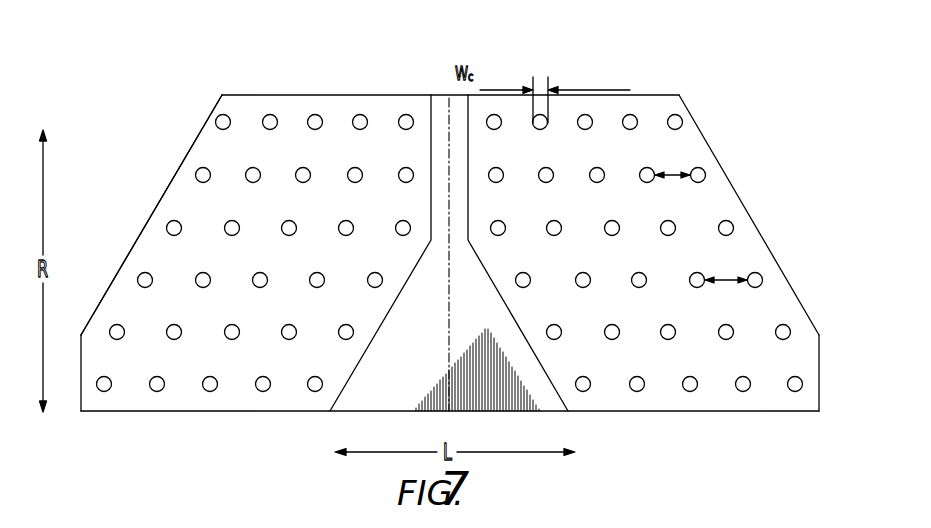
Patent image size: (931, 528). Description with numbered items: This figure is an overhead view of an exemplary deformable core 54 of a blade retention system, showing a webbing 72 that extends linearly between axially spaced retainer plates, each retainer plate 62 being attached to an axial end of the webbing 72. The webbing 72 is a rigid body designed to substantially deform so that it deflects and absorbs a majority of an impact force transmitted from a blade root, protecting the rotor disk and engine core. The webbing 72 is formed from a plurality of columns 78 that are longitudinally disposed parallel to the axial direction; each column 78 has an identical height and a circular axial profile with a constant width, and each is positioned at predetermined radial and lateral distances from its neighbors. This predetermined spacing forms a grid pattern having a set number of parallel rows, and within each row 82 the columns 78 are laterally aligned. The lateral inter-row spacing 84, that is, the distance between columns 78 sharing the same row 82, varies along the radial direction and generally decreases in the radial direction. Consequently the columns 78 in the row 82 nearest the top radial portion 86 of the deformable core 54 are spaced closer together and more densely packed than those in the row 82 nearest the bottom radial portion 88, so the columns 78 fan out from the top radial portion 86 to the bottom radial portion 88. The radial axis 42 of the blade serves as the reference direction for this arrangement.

The radial axis 42 is at (449, 343).
The deformable core 54 is at (204, 138).
The retainer plate 62 is at (819, 411).
The webbing 72 is at (153, 222).
The column 78 is at (633, 113).
The row 82 is at (726, 175).
The inter-row spacing 84 is at (670, 172).
The top radial portion 86 is at (320, 94).
The bottom radial portion 88 is at (240, 412).